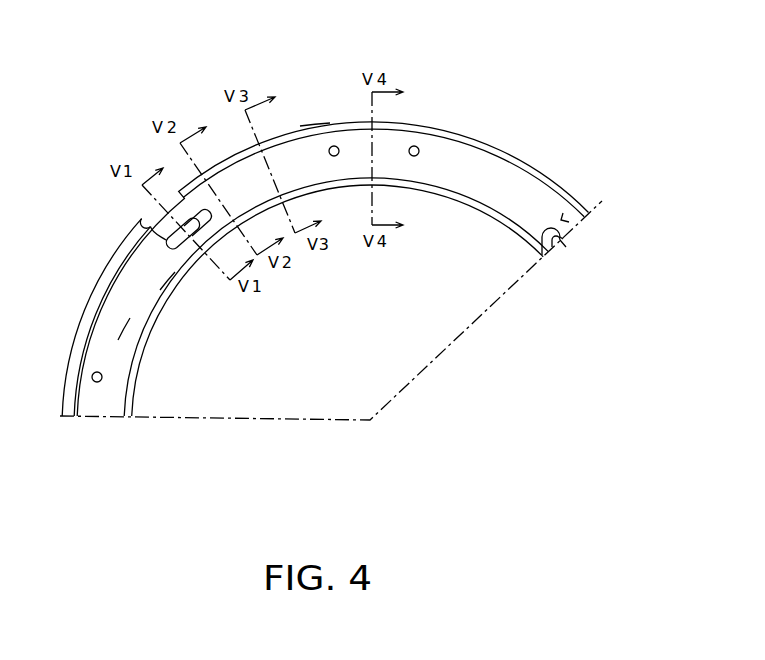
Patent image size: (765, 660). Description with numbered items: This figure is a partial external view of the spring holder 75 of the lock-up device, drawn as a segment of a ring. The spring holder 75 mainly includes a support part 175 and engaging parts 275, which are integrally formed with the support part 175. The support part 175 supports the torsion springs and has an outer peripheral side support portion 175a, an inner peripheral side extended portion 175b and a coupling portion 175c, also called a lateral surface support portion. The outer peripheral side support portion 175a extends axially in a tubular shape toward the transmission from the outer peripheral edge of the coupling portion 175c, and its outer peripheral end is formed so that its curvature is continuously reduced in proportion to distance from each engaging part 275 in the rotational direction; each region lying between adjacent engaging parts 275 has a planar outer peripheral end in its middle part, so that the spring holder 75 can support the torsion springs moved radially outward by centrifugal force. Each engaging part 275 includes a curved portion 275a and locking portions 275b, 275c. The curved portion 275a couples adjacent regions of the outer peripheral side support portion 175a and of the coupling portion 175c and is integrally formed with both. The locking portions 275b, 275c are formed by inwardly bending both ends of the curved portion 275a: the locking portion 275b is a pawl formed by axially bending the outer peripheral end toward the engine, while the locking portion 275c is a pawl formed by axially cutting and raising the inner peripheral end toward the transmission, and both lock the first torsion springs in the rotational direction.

The spring holder 75 is at (570, 65).
The support part 175 is at (490, 107).
The outer peripheral side support portion 175a is at (307, 126).
The inner peripheral side extended portion 175b is at (167, 282).
The coupling portion 175c is at (123, 325).
The engaging part 275 is at (130, 206).
The curved portion 275a is at (140, 218).
The locking portion 275b is at (160, 228).
The locking portion 275c is at (180, 244).